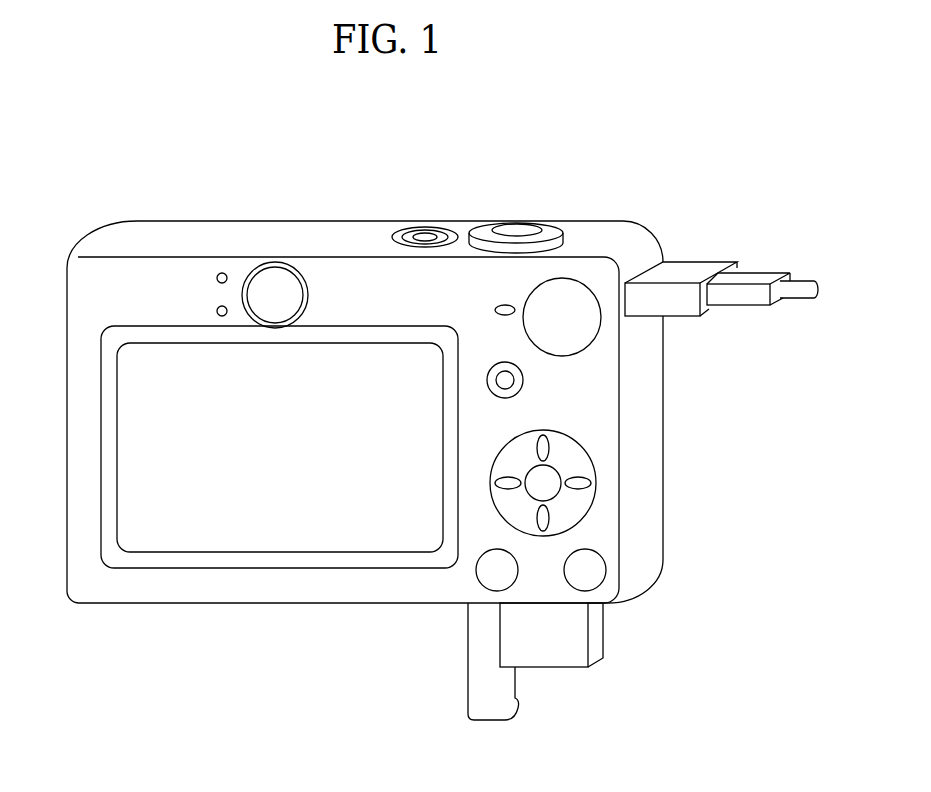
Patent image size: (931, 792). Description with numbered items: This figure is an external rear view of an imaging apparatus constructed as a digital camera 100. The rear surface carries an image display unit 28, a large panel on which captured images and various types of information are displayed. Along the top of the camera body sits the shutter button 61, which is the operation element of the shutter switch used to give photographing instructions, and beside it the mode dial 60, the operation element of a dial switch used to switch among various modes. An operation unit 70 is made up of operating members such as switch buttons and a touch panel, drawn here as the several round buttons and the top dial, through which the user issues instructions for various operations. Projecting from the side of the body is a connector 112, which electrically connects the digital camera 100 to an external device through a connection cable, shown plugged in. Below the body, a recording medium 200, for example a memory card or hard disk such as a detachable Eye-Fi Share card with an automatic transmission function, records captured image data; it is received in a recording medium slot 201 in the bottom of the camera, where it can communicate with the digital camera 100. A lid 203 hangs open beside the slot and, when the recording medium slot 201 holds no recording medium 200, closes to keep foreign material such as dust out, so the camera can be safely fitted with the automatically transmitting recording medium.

The digital camera 100 is at (209, 604).
The image display unit 28 is at (197, 378).
The shutter button 61 is at (512, 228).
The mode dial 60 is at (567, 303).
The operation unit 70 is at (422, 232).
The connector 112 is at (667, 257).
The recording medium 200 is at (564, 637).
The recording medium slot 201 is at (518, 620).
The lid 203 is at (458, 704).